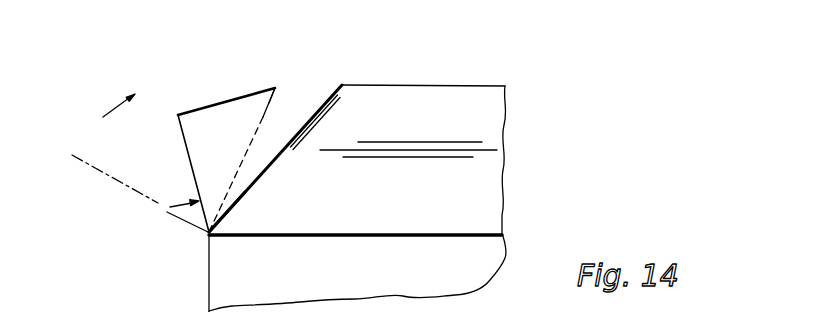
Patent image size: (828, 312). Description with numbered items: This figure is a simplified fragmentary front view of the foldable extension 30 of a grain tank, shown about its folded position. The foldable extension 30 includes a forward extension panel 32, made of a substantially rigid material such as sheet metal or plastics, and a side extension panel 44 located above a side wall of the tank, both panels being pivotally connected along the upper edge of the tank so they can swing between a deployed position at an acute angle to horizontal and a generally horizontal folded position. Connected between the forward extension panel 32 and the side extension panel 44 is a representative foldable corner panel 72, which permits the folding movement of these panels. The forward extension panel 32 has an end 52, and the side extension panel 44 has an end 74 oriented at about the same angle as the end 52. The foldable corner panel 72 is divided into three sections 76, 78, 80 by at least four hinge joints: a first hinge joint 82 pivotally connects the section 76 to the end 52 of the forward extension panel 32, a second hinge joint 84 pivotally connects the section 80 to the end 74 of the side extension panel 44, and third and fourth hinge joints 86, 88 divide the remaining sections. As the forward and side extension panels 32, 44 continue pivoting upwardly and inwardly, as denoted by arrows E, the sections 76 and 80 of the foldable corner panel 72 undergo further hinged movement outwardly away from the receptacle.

The foldable extension 30 is at (511, 192).
The forward extension panel 32 is at (503, 268).
The side extension panel 44 is at (275, 88).
The end 52 is at (342, 85).
The foldable corner panel 72 is at (167, 212).
The end 74 is at (273, 96).
The section 76 is at (178, 115).
The section 78 is at (237, 202).
The section 80 is at (230, 100).
The first hinge joint 82 is at (307, 130).
The second hinge joint 84 is at (253, 138).
The third hinge joint 86 is at (293, 135).
The fourth hinge joint 88 is at (189, 162).
The arrows E is at (108, 110).